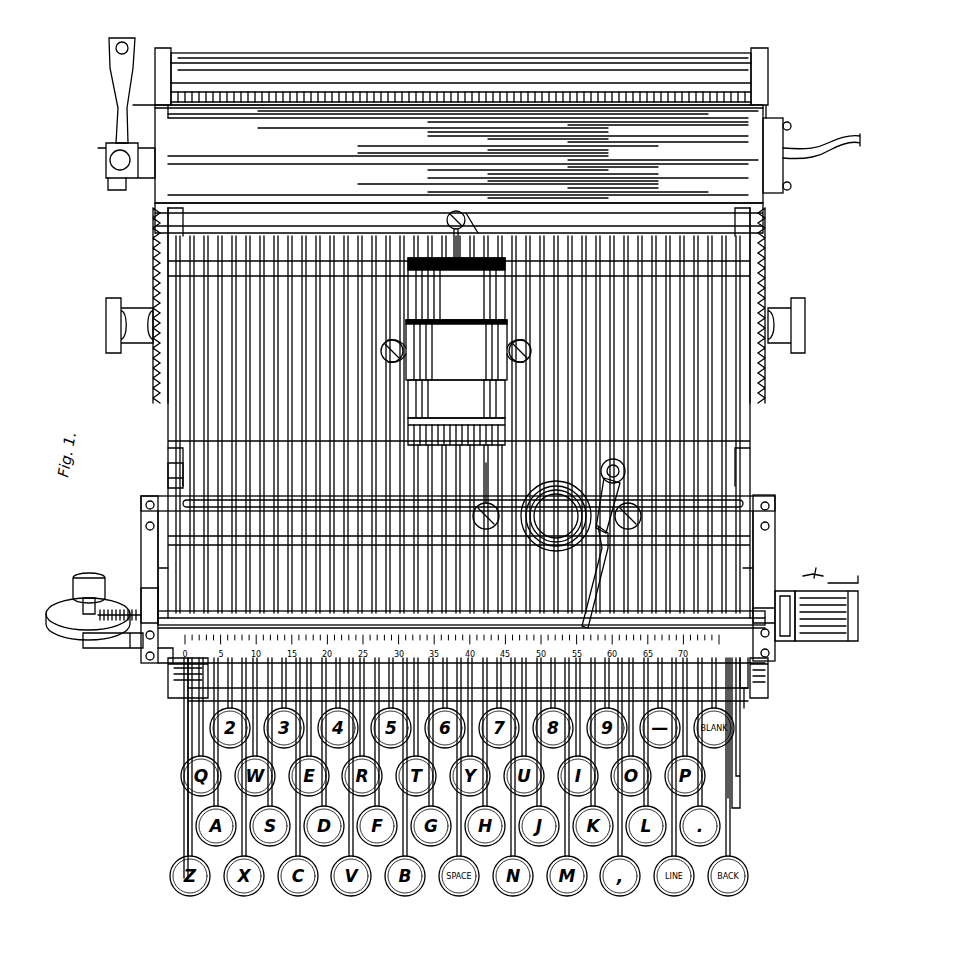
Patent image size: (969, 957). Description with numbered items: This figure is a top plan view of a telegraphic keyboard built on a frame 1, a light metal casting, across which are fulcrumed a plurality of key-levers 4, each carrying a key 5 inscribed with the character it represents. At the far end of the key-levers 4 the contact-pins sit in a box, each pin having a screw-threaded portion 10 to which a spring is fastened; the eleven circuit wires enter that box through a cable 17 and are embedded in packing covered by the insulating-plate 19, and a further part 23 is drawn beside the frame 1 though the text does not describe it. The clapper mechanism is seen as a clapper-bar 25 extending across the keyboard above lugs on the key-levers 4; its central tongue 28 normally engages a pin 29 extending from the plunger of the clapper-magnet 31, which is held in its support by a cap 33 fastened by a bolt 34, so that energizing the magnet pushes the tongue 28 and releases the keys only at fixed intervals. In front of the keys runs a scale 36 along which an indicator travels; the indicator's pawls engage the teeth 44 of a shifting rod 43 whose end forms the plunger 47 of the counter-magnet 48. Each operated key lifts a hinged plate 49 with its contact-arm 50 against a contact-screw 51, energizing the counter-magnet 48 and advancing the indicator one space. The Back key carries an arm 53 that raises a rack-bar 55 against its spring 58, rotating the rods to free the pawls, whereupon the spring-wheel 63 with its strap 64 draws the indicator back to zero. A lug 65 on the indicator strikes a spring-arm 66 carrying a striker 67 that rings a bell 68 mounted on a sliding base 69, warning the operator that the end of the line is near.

The frame 1 is at (168, 470).
The key-levers 4 is at (178, 728).
The key 5 is at (350, 868).
The screw-threaded portion 10 is at (160, 470).
The cable 17 is at (790, 150).
The insulating-plate 19 is at (459, 154).
The platen knob 23 is at (102, 300).
The clapper-bar 25 is at (400, 215).
The tongue 28 is at (445, 205).
The pin 29 is at (462, 212).
The clapper-magnet 31 is at (456, 289).
The cap 33 is at (444, 350).
The bolt 34 is at (493, 352).
The scale 36 is at (762, 665).
The shifting rod 43 is at (690, 618).
The teeth 44 is at (456, 412).
The plunger 47 is at (777, 635).
The counter-magnet 48 is at (822, 628).
The hinged plate 49 is at (245, 65).
The contact-arm 50 is at (104, 80).
The contact-screw 51 is at (150, 520).
The arm 53 is at (735, 700).
The rack-bar 55 is at (146, 290).
The spring 58 is at (162, 652).
The spring-wheel 63 is at (60, 592).
The strap 64 is at (95, 640).
The lug 65 is at (135, 600).
The spring-arm 66 is at (592, 612).
The striker 67 is at (602, 496).
The bell 68 is at (556, 516).
The base 69 is at (491, 496).